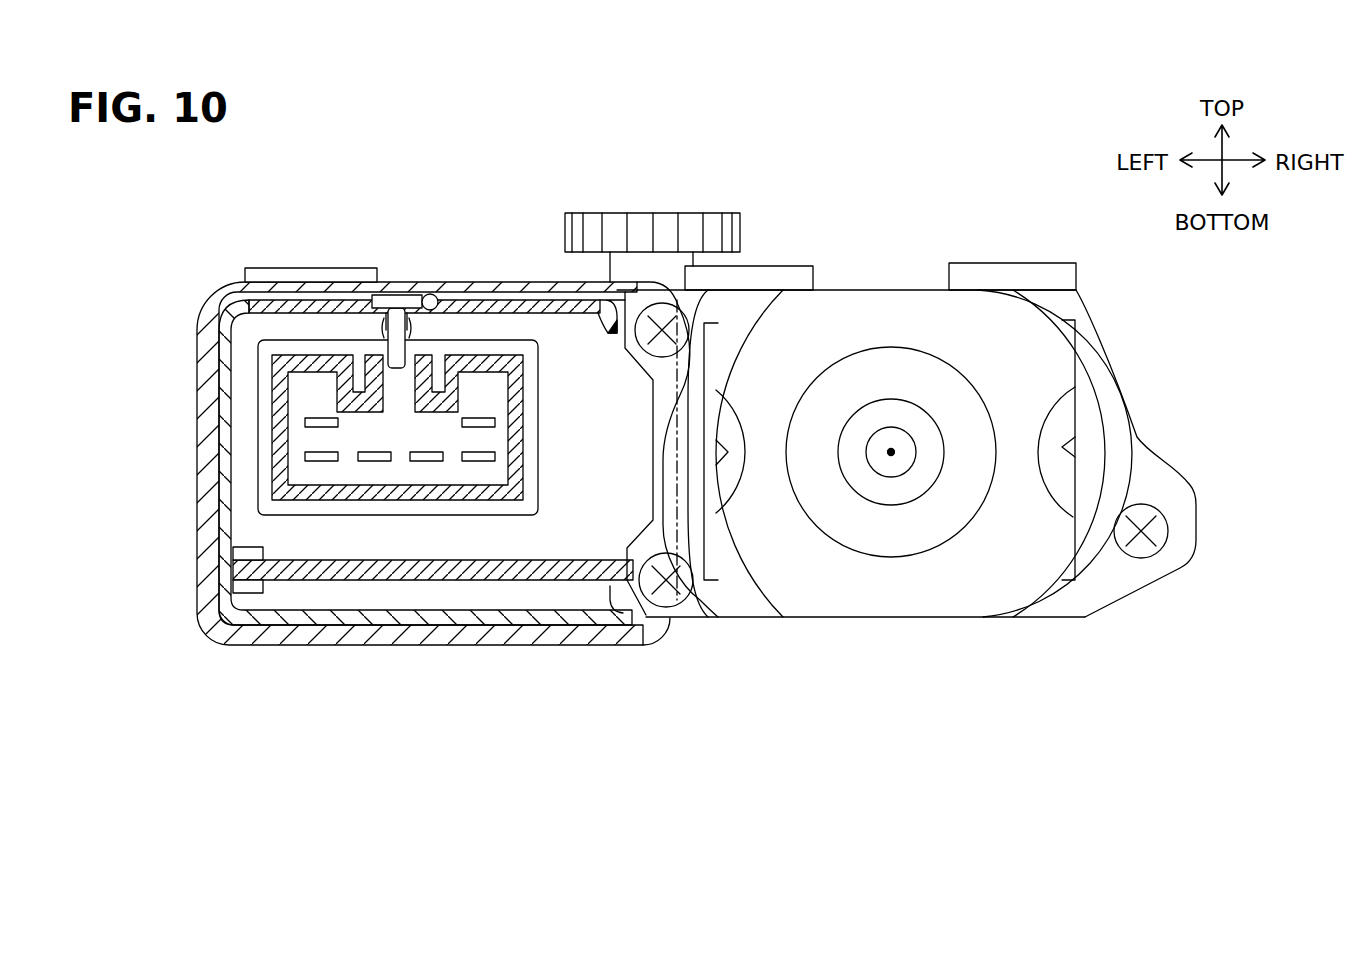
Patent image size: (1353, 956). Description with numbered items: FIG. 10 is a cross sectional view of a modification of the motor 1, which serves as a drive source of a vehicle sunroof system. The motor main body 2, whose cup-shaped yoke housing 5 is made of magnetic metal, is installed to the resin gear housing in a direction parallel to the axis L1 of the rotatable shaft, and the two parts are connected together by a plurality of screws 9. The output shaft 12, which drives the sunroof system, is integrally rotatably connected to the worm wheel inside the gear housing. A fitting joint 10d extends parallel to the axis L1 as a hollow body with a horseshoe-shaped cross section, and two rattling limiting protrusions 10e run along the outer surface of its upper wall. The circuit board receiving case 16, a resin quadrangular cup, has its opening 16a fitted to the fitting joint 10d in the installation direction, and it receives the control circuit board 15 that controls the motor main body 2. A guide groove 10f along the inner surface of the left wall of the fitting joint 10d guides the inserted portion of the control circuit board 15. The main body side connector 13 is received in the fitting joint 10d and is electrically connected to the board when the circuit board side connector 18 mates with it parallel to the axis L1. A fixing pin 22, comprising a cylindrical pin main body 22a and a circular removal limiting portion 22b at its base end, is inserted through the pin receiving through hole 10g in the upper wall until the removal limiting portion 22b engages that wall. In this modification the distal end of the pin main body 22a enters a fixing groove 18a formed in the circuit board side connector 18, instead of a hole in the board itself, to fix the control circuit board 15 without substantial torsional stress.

The motor 1 is at (1009, 132).
The motor main body 2 is at (898, 276).
The yoke housing 5 is at (940, 608).
The screws 9 is at (690, 305).
The fitting joint 10d is at (528, 300).
The rattling limiting protrusions 10e is at (272, 288).
The guide groove 10f is at (263, 550).
The pin receiving through hole 10g is at (390, 322).
The output shaft 12 is at (640, 216).
The main body side connector 13 is at (540, 382).
The control circuit board 15 is at (600, 560).
The circuit board receiving case 16 is at (200, 408).
The opening 16a is at (222, 485).
The circuit board side connector 18 is at (526, 440).
The fixing groove 18a is at (410, 332).
The fixing pin 22 is at (465, 228).
The pin main body 22a is at (430, 296).
The removal limiting portion 22b is at (386, 296).
The axis L1 is at (891, 452).